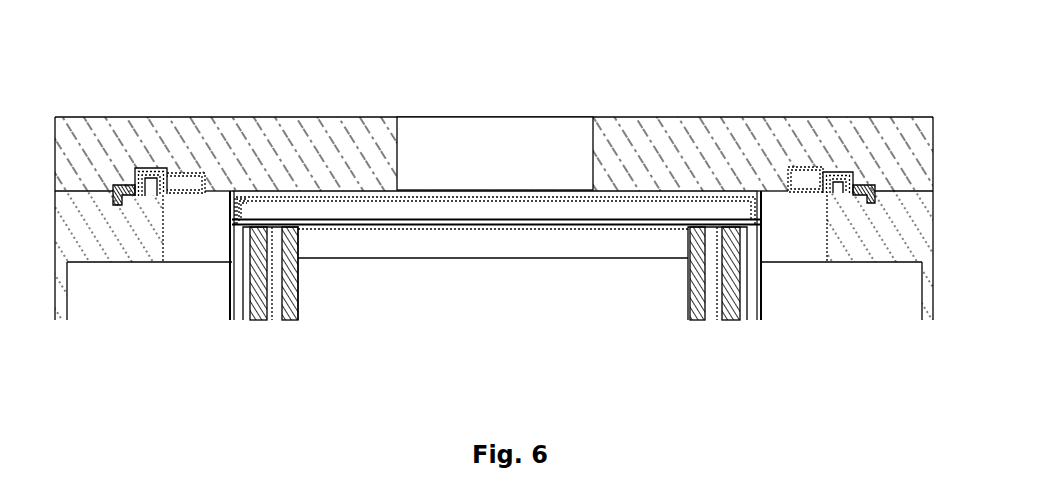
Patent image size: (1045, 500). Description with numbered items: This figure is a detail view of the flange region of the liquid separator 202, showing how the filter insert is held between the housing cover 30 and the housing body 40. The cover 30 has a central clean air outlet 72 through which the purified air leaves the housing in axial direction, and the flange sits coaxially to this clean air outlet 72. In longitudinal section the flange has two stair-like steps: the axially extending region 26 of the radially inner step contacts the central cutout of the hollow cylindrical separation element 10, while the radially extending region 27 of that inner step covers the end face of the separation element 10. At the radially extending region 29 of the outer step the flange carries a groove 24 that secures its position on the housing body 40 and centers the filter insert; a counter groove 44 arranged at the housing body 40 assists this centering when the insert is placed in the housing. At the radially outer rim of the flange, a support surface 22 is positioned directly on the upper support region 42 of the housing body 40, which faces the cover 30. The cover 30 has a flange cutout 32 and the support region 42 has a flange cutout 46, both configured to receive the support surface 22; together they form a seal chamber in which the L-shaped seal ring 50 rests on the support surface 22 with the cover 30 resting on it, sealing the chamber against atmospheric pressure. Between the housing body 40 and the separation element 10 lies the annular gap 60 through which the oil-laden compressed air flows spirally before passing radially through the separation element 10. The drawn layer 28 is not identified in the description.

The liquid separator 202 is at (746, 69).
The housing cover 30 is at (333, 130).
The clean air outlet 72 is at (481, 161).
The membrane layer 28 is at (496, 215).
The axially extending region 26 is at (491, 248).
The annular gap 60 is at (128, 306).
The housing body 40 is at (52, 272).
The groove 24 is at (497, 209).
The flange cutout of the cover 32 is at (192, 172).
The radially extending region 27 is at (240, 213).
The radially extending region of the outer step 29 is at (204, 196).
The seal ring 50 is at (116, 204).
The support surface 22 is at (134, 200).
The counter groove 44 is at (156, 186).
The support region 42 is at (859, 207).
The flange cutout of the housing body 46 is at (860, 200).
The separation element 10 is at (256, 322).